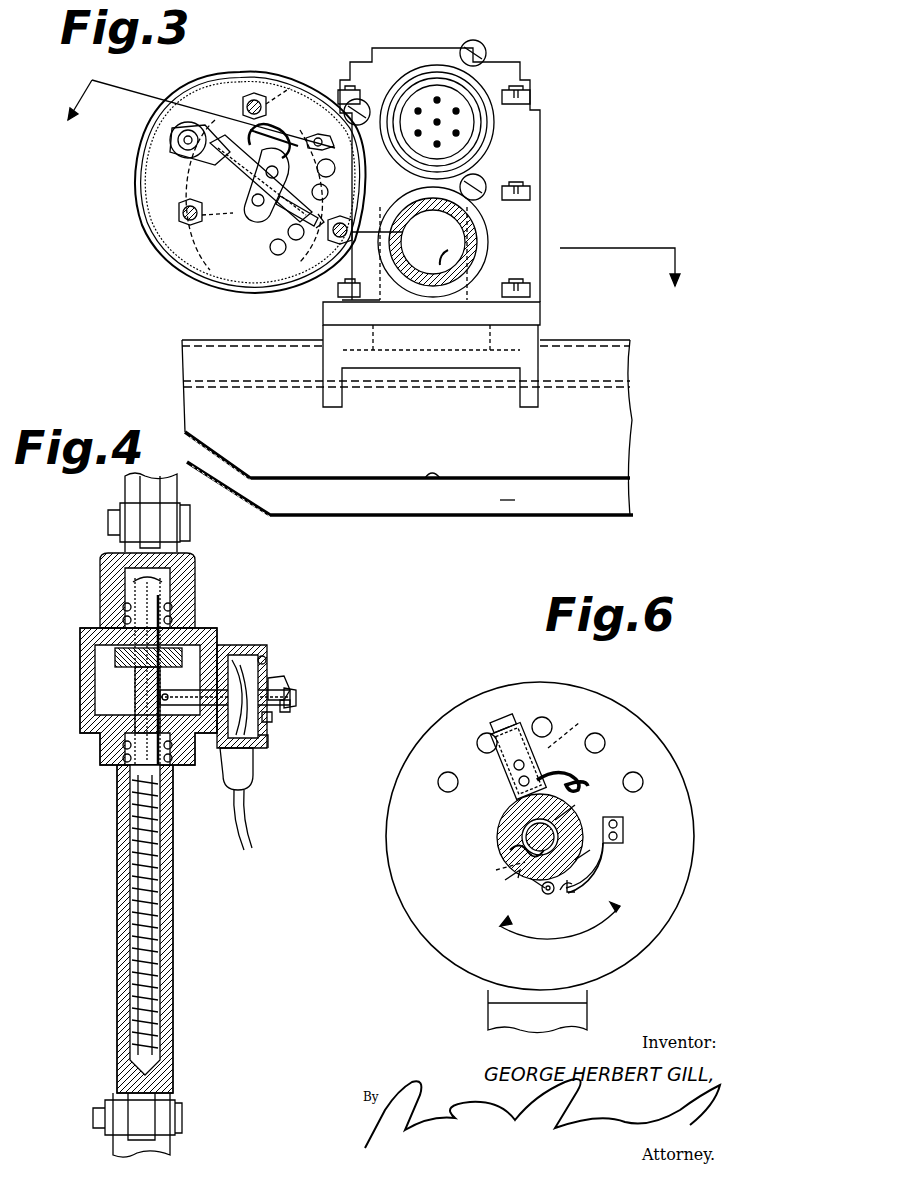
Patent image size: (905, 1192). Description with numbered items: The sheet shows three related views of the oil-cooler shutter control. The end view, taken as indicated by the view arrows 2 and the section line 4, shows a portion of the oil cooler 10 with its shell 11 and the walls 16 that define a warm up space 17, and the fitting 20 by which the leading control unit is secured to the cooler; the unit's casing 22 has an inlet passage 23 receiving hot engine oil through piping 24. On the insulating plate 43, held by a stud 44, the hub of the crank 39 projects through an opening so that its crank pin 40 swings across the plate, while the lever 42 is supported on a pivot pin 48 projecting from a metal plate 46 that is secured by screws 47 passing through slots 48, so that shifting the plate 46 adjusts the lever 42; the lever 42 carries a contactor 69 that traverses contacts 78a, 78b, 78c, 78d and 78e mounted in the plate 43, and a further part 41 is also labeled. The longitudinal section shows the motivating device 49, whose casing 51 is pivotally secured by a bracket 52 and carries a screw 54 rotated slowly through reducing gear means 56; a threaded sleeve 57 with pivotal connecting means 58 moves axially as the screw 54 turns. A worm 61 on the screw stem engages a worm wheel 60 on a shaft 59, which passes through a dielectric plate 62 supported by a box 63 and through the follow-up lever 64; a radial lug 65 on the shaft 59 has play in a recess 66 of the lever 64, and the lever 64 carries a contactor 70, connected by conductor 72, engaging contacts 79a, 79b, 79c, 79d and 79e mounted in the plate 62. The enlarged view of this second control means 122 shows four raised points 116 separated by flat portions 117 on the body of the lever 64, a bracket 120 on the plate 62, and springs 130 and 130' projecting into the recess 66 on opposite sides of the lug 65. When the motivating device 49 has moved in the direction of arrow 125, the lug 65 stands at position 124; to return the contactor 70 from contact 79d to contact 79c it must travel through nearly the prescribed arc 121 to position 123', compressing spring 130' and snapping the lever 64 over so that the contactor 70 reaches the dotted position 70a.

In FIG. 3, the section line 2- 2 is at (365, 196).
In FIG. 3, the distributor assembly 4 is at (126, 137).
In FIG. 3, the oil cooler 10 is at (620, 440).
In FIG. 3, the shell 11 is at (620, 496).
In FIG. 3, the walls 16 is at (430, 480).
In FIG. 3, the warm up space 17 is at (508, 500).
In FIG. 3, the fitting 20 is at (545, 112).
In FIG. 3, the casing 22 is at (518, 165).
In FIG. 3, the inlet passage 23 is at (448, 255).
In FIG. 3, the piping 24 is at (470, 232).
In FIG. 3, the crank 39 is at (257, 213).
In FIG. 3, the crank pin 40 is at (222, 148).
In FIG. 3, the lever 41 is at (238, 198).
In FIG. 3, the lever 42 is at (232, 150).
In FIG. 3, the plate of insulating material 43 is at (248, 262).
In FIG. 3, the stud 44 is at (361, 309).
In FIG. 3, the metal plate 46 is at (188, 110).
In FIG. 3, the screws 47 is at (262, 100).
In FIG. 3, the pivot pin 48 is at (275, 102).
In FIG. 4, the motivating device 49 is at (92, 605).
In FIG. 4, the casing 51 is at (196, 610).
In FIG. 4, the bracket 52 is at (135, 493).
In FIG. 4, the screw 54 is at (130, 830).
In FIG. 4, the reducing gear means 56 is at (125, 664).
In FIG. 4, the threaded sleeve 57 is at (175, 942).
In FIG. 4, the pivotal connecting means 58 is at (170, 1095).
In FIG. 4, the shaft 59 is at (214, 760).
In FIG. 6, the shaft 59 is at (508, 820).
In FIG. 4, the worm wheel 60 is at (135, 700).
In FIG. 4, the worm 61 is at (135, 690).
In FIG. 4, the dielectric plate 62 is at (272, 740).
In FIG. 6, the dielectric plate 62 is at (412, 868).
In FIG. 4, the box 63 is at (242, 650).
In FIG. 4, the lever 64 is at (285, 690).
In FIG. 6, the lever 64 is at (500, 782).
In FIG. 4, the radial lug 65 is at (283, 708).
In FIG. 6, the radial lug 65 is at (546, 894).
In FIG. 4, the recess 66 is at (285, 718).
In FIG. 3, the contactor 69 is at (286, 222).
In FIG. 4, the contactor 70 is at (275, 665).
In FIG. 6, the contactor 70 is at (520, 735).
In FIG. 6, the dotted-line position of contactor 70a is at (586, 726).
In FIG. 6, the conductor 72 is at (585, 780).
In FIG. 3, the contact 78a is at (336, 168).
In FIG. 3, the contact 78b is at (340, 197).
In FIG. 3, the contact 78c is at (368, 237).
In FIG. 3, the contact 78d is at (295, 241).
In FIG. 3, the contact 78e is at (277, 256).
In FIG. 6, the contact 79a is at (640, 780).
In FIG. 6, the contact 79b is at (600, 740).
In FIG. 4, the contact 79c is at (265, 655).
In FIG. 6, the contact 79c is at (548, 722).
In FIG. 6, the contact 79d is at (487, 733).
In FIG. 6, the contact 79e is at (440, 782).
In FIG. 6, the raised points 116 is at (590, 868).
In FIG. 6, the flat portions 117 is at (598, 845).
In FIG. 6, the bracket 120 is at (625, 830).
In FIG. 6, the prescribed arc 121 is at (552, 935).
In FIG. 6, the second control means 122 is at (512, 878).
In FIG. 6, the lug position 123' is at (484, 876).
In FIG. 6, the lug position 124 is at (590, 860).
In FIG. 6, the arrow 125 is at (575, 882).
In FIG. 6, the spring 130 is at (607, 807).
In FIG. 6, the spring 130' is at (488, 843).